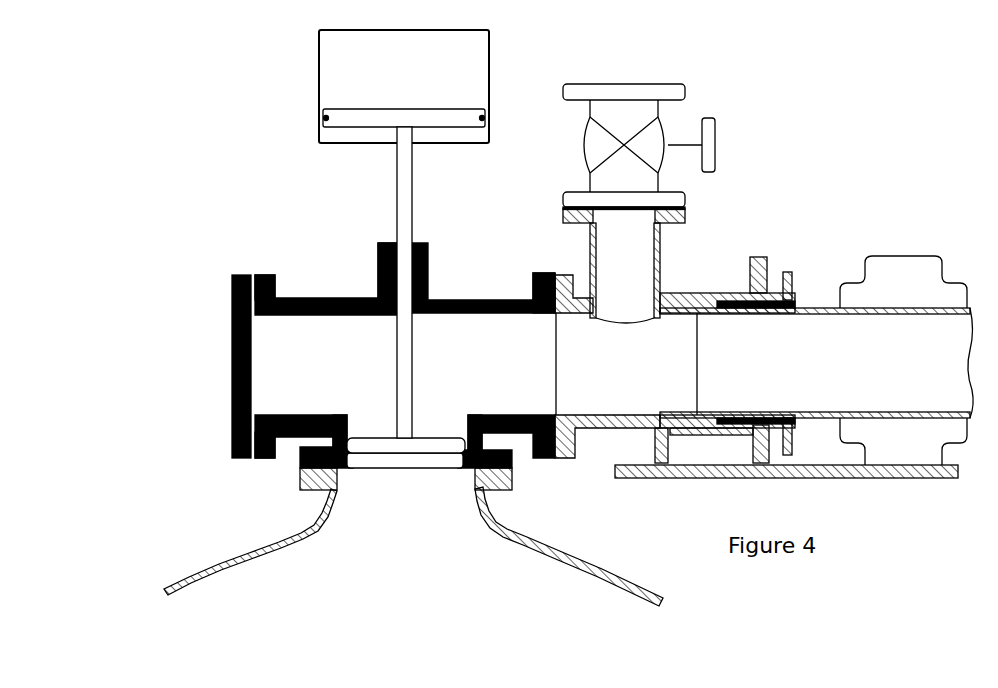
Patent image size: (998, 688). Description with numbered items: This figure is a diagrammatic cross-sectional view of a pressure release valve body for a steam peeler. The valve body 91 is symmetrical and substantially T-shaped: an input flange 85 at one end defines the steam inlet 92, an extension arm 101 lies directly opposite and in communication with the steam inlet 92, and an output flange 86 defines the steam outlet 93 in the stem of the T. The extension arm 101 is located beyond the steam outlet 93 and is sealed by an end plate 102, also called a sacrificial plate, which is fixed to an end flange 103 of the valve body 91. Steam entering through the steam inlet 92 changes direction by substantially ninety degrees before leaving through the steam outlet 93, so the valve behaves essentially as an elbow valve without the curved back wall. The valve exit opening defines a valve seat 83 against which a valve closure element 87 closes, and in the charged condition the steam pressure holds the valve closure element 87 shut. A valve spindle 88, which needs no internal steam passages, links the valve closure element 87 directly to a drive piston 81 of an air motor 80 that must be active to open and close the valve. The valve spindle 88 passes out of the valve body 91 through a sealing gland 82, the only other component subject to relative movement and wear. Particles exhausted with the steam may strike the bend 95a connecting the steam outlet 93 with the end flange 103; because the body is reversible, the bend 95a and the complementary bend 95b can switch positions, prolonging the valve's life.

The air motor 80 is at (490, 40).
The drive piston 81 is at (442, 113).
The valve spindle 88 is at (408, 197).
The sealing gland 82 is at (412, 246).
The input flange 85 is at (543, 270).
The end plate 102 is at (240, 273).
The end flange 103 is at (265, 273).
The extension arm 101 is at (275, 352).
The valve body 91 is at (222, 418).
The steam inlet 92 is at (557, 357).
The bend 95a is at (342, 423).
The complementary bend 95b is at (469, 413).
The valve seat 83 is at (351, 440).
The valve closure element 87 is at (442, 438).
The output flange 86 is at (300, 466).
The steam outlet 93 is at (392, 476).